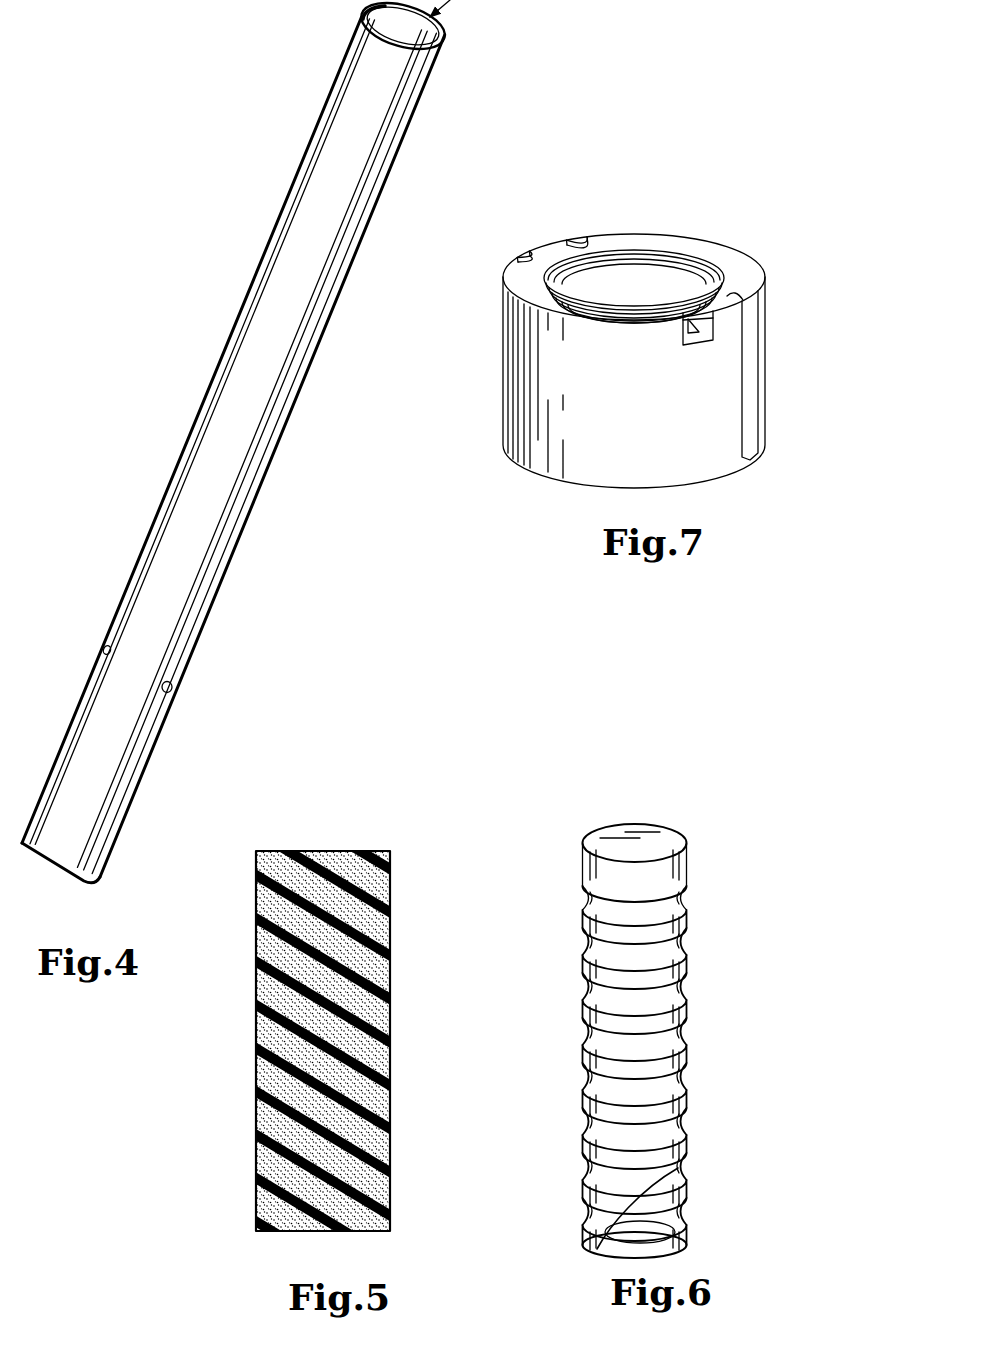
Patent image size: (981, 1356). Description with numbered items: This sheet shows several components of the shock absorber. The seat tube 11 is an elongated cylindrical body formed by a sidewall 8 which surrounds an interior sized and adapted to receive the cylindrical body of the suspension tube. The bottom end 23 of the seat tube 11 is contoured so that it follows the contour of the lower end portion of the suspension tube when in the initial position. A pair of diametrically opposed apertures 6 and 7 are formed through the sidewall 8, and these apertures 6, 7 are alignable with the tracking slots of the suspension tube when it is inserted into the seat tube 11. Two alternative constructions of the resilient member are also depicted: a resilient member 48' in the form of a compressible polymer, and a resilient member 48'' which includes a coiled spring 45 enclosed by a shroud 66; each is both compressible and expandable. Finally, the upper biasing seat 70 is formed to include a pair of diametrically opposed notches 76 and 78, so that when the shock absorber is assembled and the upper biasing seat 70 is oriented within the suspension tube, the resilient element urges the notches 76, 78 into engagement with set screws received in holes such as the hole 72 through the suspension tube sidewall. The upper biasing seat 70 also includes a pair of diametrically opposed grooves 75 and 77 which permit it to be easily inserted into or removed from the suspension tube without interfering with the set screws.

In FIG. 4, the seat tube 11 is at (249, 466).
In FIG. 4, the sidewall 8 is at (215, 598).
In FIG. 4, the bottom end 23 is at (55, 863).
In FIG. 4, the aperture 6 is at (104, 646).
In FIG. 4, the aperture 7 is at (172, 691).
In FIG. 7, the upper biasing seat 70 is at (651, 318).
In FIG. 7, the hole 72 is at (637, 293).
In FIG. 7, the groove 75 is at (523, 256).
In FIG. 7, the notch 76 is at (575, 243).
In FIG. 7, the groove 77 is at (749, 349).
In FIG. 7, the notch 78 is at (698, 326).
In FIG. 5, the resilient member 48' is at (369, 1045).
In FIG. 6, the resilient member 48'' is at (706, 1041).
In FIG. 6, the shroud 66 is at (689, 898).
In FIG. 6, the coiled spring 45 is at (689, 1241).